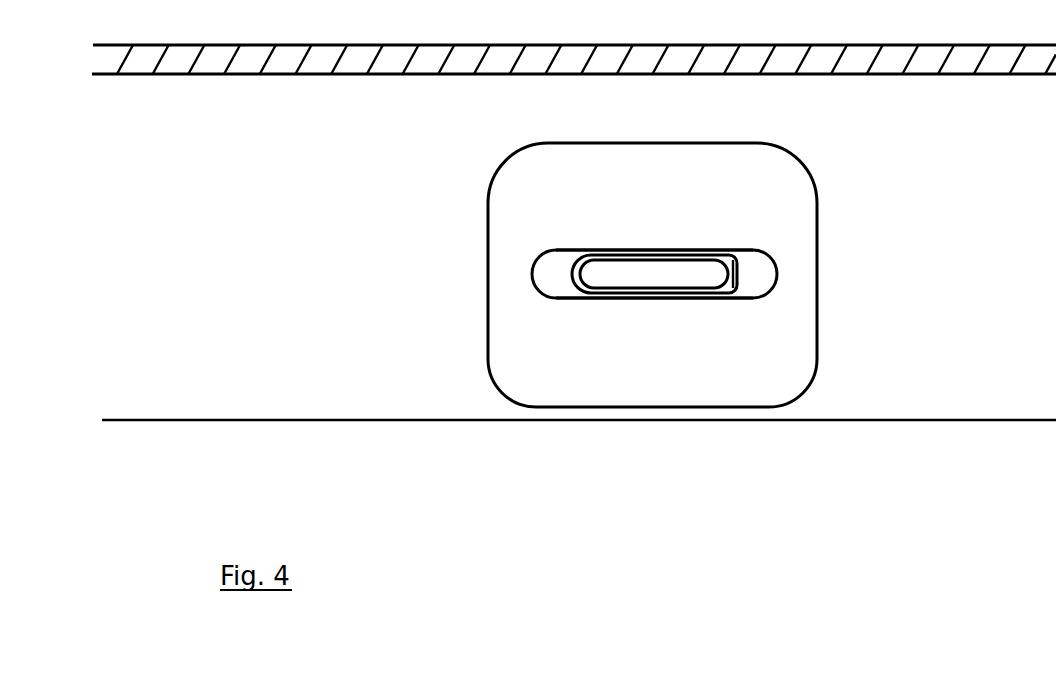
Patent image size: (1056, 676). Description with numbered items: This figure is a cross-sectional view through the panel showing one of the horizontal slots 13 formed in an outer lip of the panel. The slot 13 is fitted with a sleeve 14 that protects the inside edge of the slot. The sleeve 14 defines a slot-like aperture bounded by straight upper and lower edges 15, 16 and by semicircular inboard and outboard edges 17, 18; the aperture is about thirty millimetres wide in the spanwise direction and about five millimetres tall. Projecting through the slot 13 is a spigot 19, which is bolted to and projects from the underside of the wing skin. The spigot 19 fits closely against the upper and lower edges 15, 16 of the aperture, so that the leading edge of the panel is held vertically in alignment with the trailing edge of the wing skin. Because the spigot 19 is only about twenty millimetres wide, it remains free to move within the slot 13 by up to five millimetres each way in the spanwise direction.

The slot 13 is at (762, 265).
The sleeve 14 is at (799, 189).
The upper edge 15 is at (566, 250).
The lower edge 16 is at (562, 298).
The inboard edge 17 is at (532, 276).
The outboard edge 18 is at (777, 277).
The spigot 19 is at (677, 281).